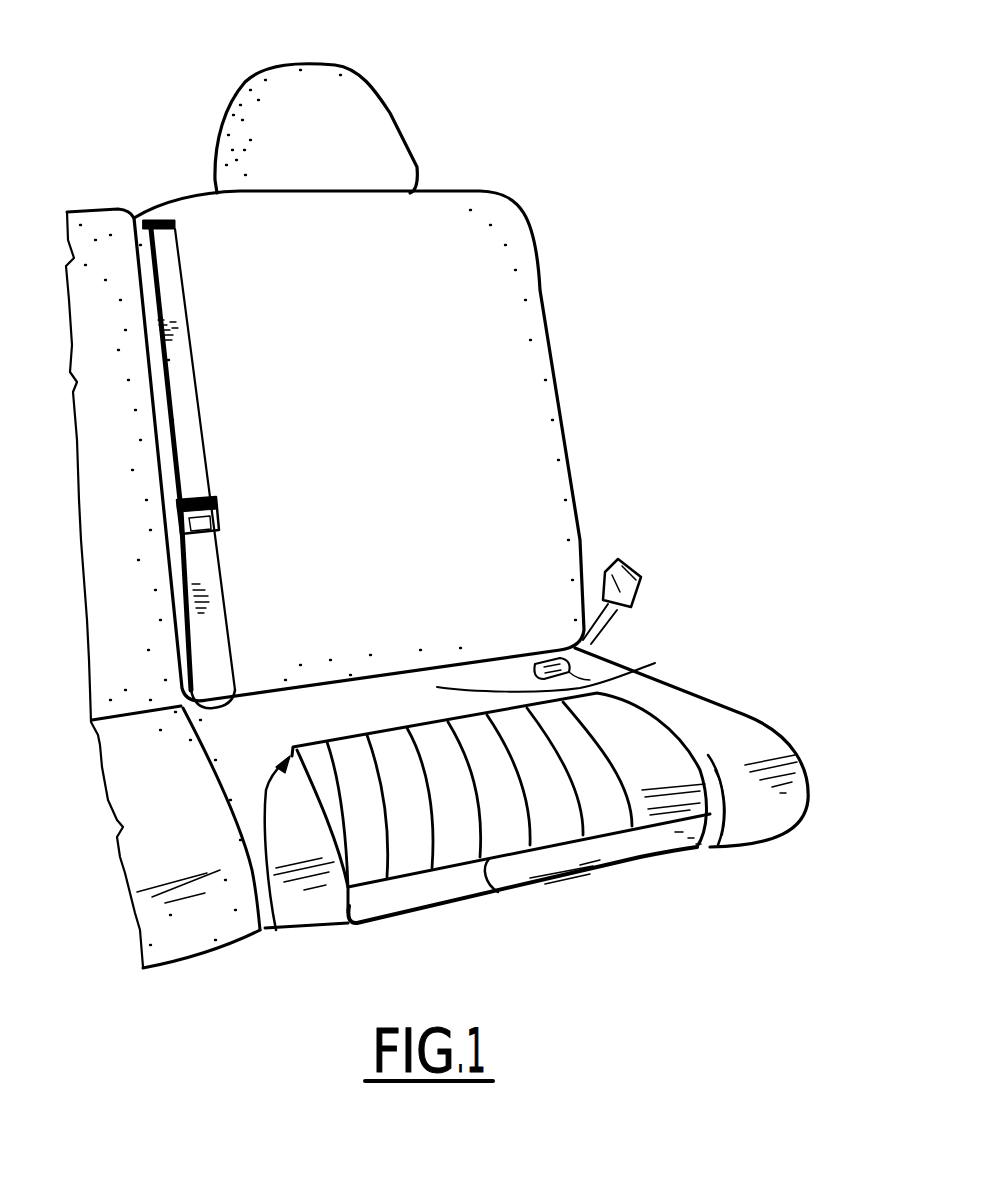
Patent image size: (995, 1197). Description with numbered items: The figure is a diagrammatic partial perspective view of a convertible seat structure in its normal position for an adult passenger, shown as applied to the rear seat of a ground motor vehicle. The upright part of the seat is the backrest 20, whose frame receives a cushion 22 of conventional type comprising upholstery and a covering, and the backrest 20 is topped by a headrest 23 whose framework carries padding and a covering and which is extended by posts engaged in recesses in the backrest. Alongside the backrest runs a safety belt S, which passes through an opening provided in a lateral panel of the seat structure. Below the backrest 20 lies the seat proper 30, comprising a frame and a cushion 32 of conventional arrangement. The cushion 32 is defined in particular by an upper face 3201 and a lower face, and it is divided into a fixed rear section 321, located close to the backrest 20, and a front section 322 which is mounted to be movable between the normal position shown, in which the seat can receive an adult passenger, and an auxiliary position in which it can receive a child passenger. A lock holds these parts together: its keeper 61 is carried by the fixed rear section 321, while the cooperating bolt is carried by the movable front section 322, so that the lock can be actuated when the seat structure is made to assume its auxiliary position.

The backrest 20 is at (557, 173).
The cushion 22 is at (508, 323).
The headrest 23 is at (343, 128).
The safety belt S is at (158, 242).
The seat proper 30 is at (780, 693).
The cushion 32 is at (713, 727).
The fixed rear section 321 is at (637, 683).
The front section 322 is at (508, 888).
The upper face 3201 is at (268, 845).
The keeper 61 is at (566, 667).